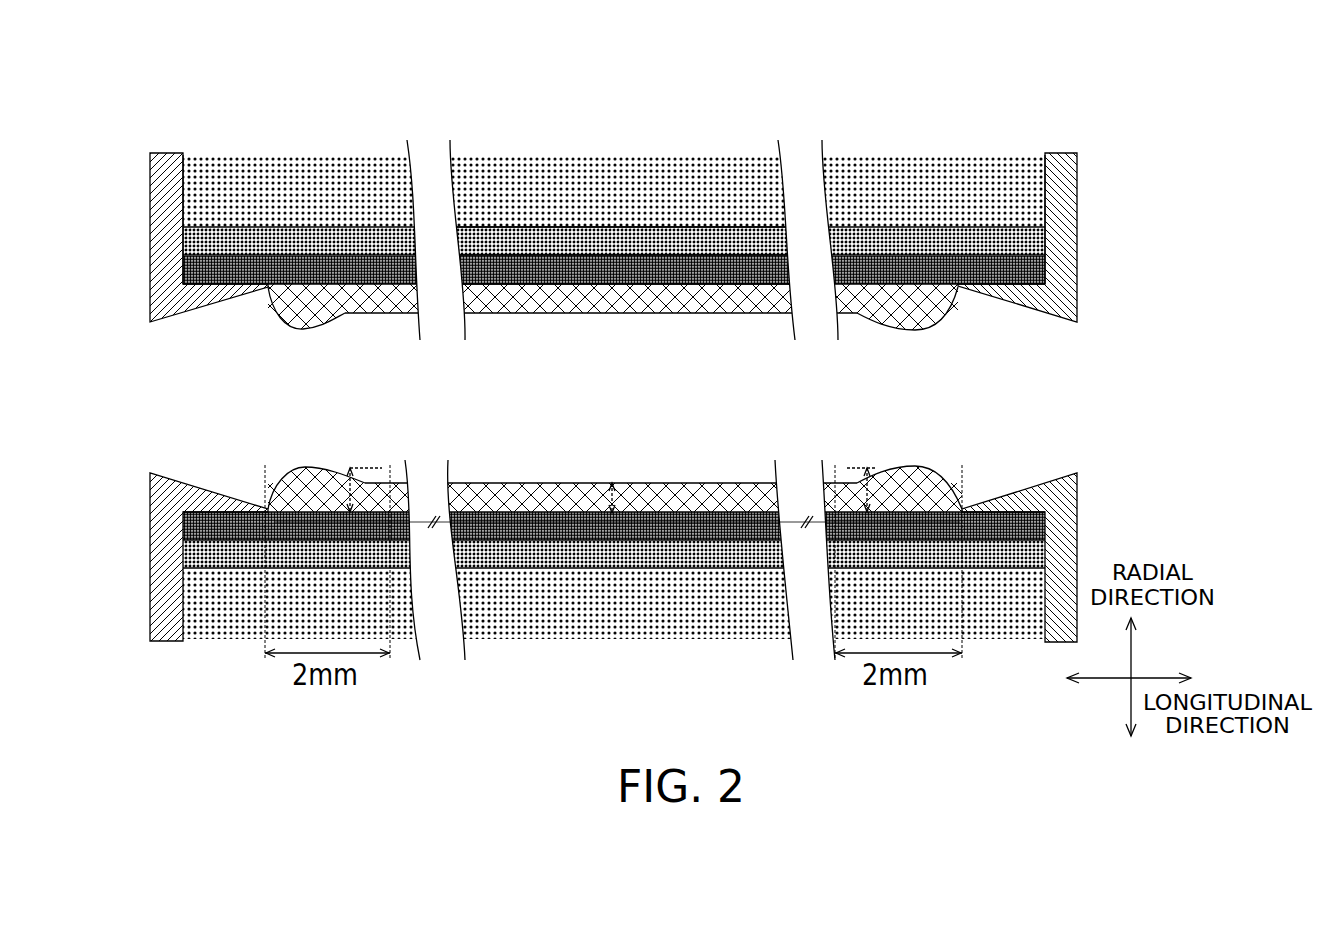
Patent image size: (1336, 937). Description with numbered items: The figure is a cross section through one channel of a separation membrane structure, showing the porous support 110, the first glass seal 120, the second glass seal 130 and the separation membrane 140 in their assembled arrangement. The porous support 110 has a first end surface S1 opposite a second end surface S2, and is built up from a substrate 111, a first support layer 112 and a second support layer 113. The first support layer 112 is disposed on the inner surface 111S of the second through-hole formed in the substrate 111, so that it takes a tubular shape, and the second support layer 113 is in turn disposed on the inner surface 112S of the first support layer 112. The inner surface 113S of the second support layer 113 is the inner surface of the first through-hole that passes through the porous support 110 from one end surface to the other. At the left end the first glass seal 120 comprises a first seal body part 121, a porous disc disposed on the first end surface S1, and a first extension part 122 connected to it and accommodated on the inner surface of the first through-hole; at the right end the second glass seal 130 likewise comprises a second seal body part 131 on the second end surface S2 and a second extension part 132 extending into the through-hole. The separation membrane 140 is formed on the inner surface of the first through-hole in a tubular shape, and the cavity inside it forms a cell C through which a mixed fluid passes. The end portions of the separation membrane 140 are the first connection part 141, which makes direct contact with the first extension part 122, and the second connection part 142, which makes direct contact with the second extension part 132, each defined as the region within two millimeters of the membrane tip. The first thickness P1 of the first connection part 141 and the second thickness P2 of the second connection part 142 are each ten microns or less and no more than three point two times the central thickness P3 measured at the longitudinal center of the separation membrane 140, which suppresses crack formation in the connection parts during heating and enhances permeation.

The porous support 110 is at (993, 70).
The substrate 111 is at (858, 180).
The first support layer 112 is at (920, 240).
The second support layer 113 is at (998, 267).
The inner surface of the second through-holes 111S is at (503, 232).
The inner surface of the first support layer 112S is at (572, 257).
The inner surface of the second support layer 113S is at (680, 288).
The first glass seal 120 is at (150, 376).
The first seal body part 121 is at (160, 272).
The first extension part 122 is at (212, 293).
The second glass seal 130 is at (1143, 376).
The second seal body part 131 is at (1077, 297).
The second extension part 132 is at (1015, 293).
The separation membrane 140 is at (718, 300).
The first connection part 141 is at (318, 330).
The second connection part 142 is at (912, 330).
The first end surface S1 is at (180, 238).
The second end surface S2 is at (1048, 240).
The cell C is at (625, 438).
The first thickness P1 is at (348, 490).
The second thickness P2 is at (876, 490).
The central thickness P3 is at (596, 498).